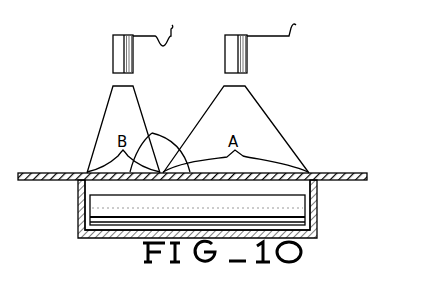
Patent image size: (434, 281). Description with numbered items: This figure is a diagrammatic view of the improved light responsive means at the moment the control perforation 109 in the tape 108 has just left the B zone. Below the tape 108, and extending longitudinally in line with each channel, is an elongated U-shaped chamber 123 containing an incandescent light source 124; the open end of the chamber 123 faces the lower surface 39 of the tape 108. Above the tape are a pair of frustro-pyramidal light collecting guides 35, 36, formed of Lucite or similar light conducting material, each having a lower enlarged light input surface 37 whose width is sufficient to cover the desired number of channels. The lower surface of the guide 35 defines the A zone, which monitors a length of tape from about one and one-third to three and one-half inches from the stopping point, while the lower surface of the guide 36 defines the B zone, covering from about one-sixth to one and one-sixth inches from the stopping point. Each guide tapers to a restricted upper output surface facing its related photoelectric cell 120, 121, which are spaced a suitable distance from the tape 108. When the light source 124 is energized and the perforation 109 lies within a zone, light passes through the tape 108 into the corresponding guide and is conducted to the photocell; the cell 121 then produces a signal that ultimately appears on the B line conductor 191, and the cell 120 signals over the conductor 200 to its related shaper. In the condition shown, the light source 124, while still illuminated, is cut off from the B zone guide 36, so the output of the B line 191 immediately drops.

The control perforation 109 is at (53, 174).
The tape 108 is at (311, 173).
The U-shaped chamber 123 is at (303, 190).
The incandescent light source 124 is at (300, 207).
The lower surface of the tape 39 is at (326, 183).
The light collecting guide 36 is at (112, 100).
The light collecting guide 35 is at (254, 101).
The light input surface 37 is at (155, 130).
The photoelectric cell 121 is at (116, 47).
The B line conductor 191 is at (164, 46).
The photoelectric cell 120 is at (246, 42).
The conductor 200 is at (294, 34).